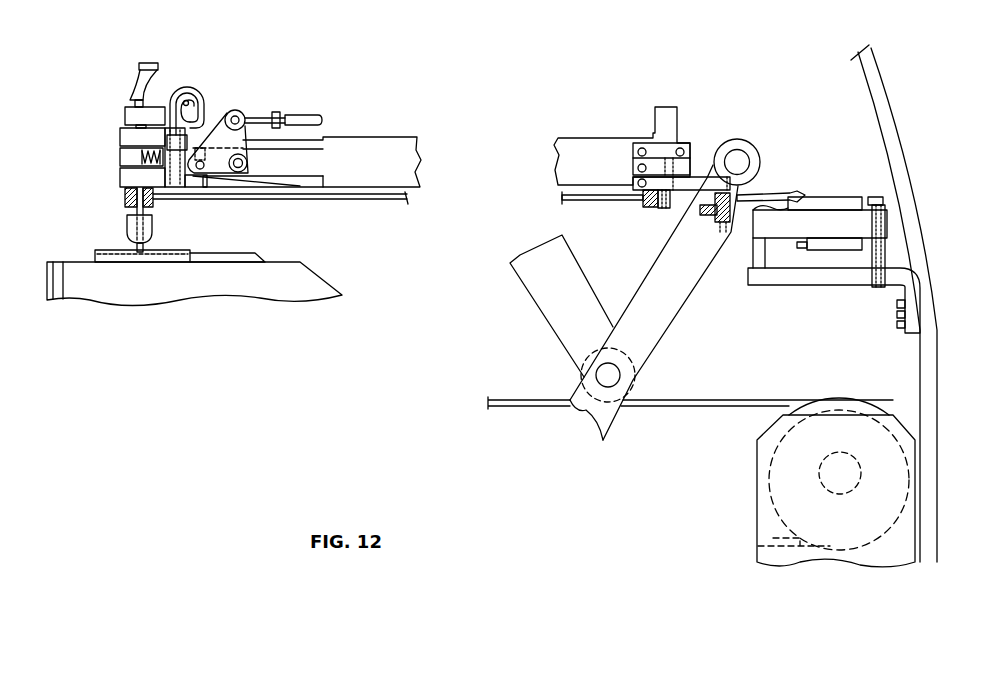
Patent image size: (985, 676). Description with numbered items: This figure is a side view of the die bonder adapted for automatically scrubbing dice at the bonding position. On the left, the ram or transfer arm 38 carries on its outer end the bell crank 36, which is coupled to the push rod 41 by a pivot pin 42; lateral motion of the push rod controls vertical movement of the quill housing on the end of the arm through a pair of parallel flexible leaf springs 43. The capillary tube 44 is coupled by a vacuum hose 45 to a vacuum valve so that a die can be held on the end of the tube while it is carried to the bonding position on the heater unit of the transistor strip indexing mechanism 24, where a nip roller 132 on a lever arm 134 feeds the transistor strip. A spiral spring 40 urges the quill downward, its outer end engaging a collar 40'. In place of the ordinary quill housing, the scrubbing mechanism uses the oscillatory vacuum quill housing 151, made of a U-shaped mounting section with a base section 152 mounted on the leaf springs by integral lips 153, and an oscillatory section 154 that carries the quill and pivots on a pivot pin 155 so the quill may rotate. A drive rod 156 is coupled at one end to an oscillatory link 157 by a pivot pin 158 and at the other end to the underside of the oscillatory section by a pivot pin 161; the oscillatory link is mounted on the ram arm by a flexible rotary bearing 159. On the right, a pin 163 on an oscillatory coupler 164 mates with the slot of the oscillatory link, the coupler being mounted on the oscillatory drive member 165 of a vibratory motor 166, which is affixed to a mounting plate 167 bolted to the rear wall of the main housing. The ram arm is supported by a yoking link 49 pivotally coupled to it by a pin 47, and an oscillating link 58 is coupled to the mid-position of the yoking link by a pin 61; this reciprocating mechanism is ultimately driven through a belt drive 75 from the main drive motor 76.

The transistor strip indexing mechanism 24 is at (303, 272).
The bell crank 36 is at (217, 103).
The ram arm 38 is at (380, 137).
The spiral spring 40 is at (190, 107).
The collar 40' is at (123, 116).
The push rod 41 is at (305, 115).
The pivot pin 42 is at (241, 112).
The leaf springs 43 is at (265, 141).
The capillary tube 44 is at (153, 220).
The vacuum hose 45 is at (140, 62).
The pin 47 is at (759, 155).
The yoking link 49 is at (686, 300).
The oscillating link 58 is at (540, 302).
The pin 61 is at (615, 365).
The belt drive 75 is at (743, 400).
The main drive motor 76 is at (863, 420).
The nip roller 132 is at (183, 263).
The lever arm 134 is at (241, 252).
The vacuum quill housing 151 is at (105, 172).
The base section 152 is at (118, 175).
The integral lips 153 is at (188, 178).
The oscillatory section 154 is at (120, 137).
The pivot pin 155 is at (120, 157).
The drive rod 156 is at (358, 200).
The oscillatory link 157 is at (697, 192).
The pivot pin 158 is at (661, 208).
The flexible rotary bearing 159 is at (667, 158).
The pivot pin 161 is at (132, 209).
The pin 163 is at (717, 142).
The oscillatory coupler 164 is at (738, 200).
The oscillatory drive member 165 is at (788, 198).
The vibratory motor 166 is at (840, 200).
The mounting plate 167 is at (847, 283).